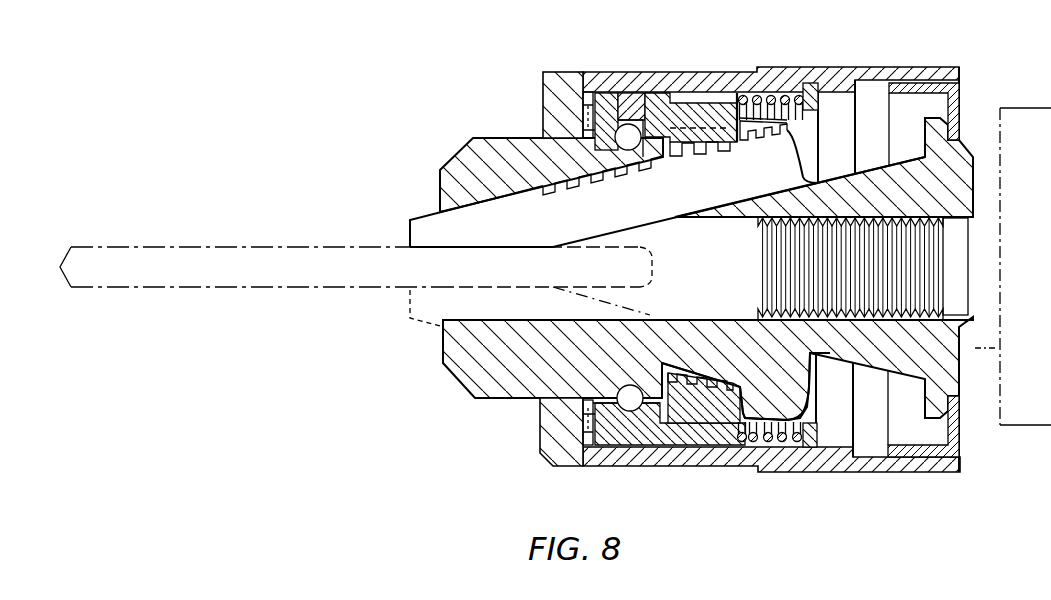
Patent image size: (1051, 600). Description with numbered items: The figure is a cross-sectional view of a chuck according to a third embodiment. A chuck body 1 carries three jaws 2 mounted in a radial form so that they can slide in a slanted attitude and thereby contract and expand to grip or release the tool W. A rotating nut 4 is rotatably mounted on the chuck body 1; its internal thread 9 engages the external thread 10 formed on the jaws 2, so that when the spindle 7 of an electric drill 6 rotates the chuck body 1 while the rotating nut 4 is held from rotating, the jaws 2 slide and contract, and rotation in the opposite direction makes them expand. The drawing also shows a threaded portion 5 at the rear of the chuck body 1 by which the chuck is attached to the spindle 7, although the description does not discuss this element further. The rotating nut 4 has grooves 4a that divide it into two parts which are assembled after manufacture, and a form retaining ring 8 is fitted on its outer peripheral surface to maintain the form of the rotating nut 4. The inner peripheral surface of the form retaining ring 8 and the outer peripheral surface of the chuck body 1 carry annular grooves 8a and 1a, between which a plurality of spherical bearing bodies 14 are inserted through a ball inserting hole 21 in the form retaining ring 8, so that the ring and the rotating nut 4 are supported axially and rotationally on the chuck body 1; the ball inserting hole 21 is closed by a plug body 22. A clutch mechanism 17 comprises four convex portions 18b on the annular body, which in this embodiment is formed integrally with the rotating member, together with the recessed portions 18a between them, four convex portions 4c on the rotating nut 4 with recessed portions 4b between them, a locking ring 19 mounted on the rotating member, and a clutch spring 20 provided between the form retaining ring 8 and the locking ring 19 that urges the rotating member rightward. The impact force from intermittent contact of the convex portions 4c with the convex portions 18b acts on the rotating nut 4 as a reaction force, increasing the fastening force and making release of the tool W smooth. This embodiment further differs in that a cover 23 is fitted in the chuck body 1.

The chuck body 1 is at (440, 180).
The annular groove 1a is at (619, 394).
The jaws 2 is at (410, 223).
The rotating nut 4 is at (731, 95).
The grooves 4a is at (740, 92).
The recessed portions 4b is at (592, 98).
The convex portions 4c is at (605, 106).
The threaded portion 5 is at (872, 313).
The electric drill 6 is at (1008, 425).
The spindle 7 is at (990, 352).
The form retaining ring 8 is at (701, 92).
The annular groove 8a is at (626, 412).
The internal thread 9 is at (720, 146).
The external thread 10 is at (566, 181).
The spherical bearing bodies 14 is at (634, 412).
The clutch mechanism 17 is at (566, 86).
The recessed portions 18a is at (584, 134).
The convex portions 18b is at (586, 104).
The locking ring 19 is at (851, 78).
The clutch spring 20 is at (797, 442).
The ball inserting hole 21 is at (630, 122).
The plug body 22 is at (637, 100).
The cover 23 is at (955, 103).
The tool W is at (158, 280).